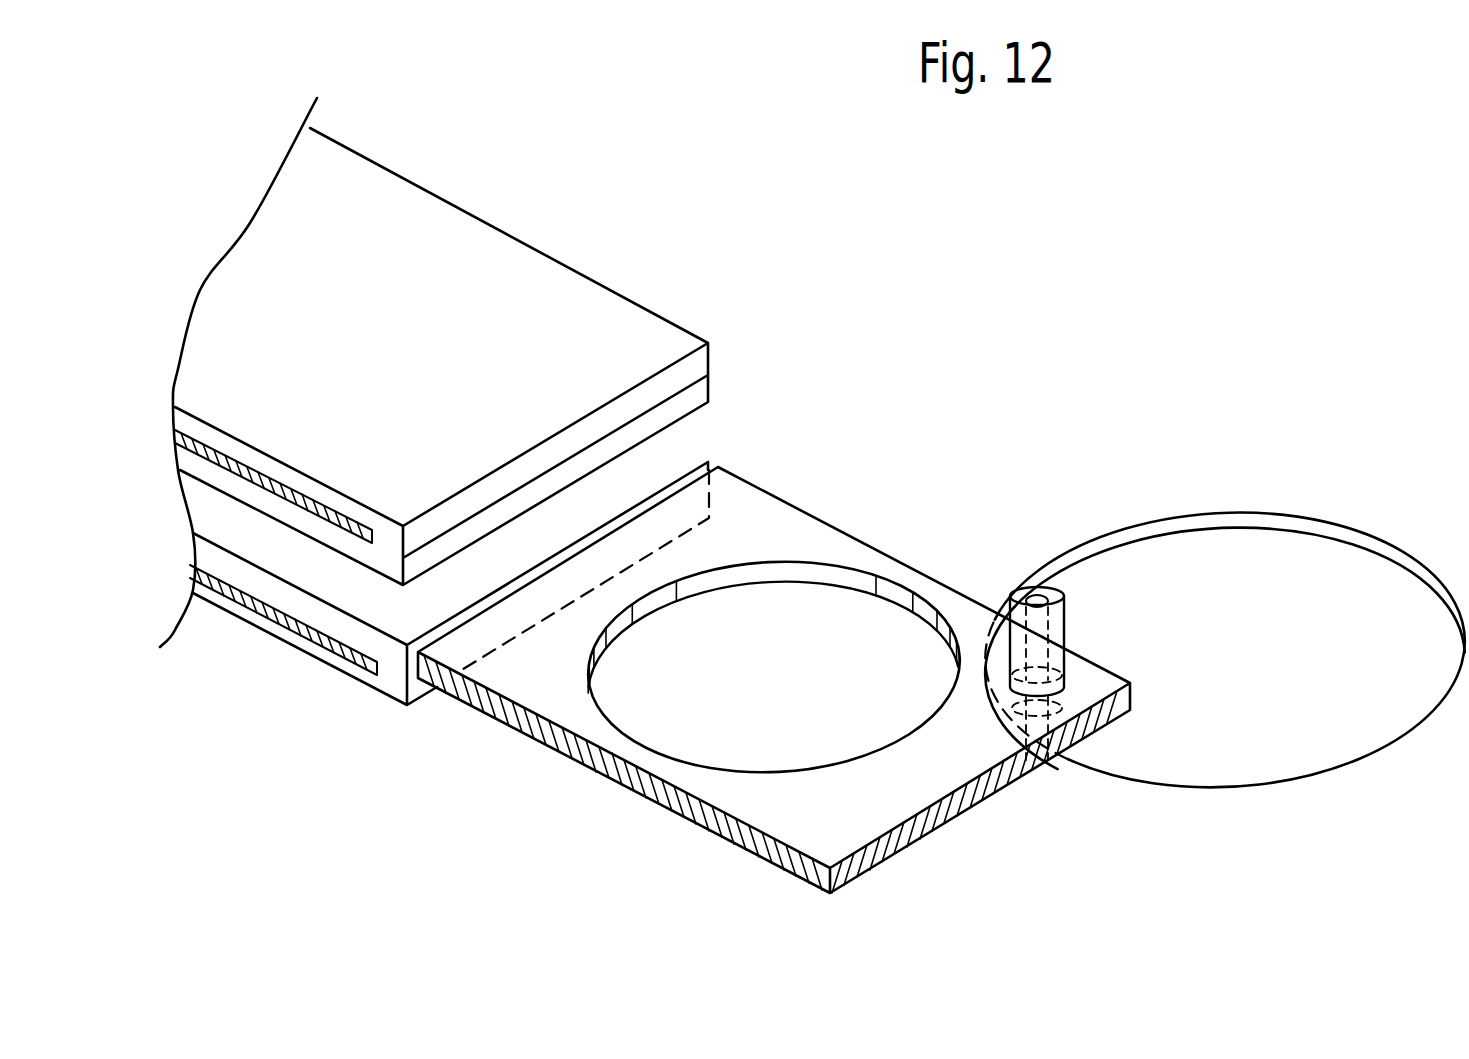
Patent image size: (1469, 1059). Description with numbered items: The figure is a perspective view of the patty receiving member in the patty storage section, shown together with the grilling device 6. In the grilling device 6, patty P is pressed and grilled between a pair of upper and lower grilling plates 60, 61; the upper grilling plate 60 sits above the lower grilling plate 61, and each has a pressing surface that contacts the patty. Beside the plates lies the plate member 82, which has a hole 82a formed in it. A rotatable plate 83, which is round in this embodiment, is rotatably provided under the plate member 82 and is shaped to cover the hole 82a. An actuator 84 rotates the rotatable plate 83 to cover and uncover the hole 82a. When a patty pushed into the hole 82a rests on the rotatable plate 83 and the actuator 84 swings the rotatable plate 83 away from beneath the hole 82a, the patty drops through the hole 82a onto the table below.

The grilling device 6 is at (433, 136).
The upper grilling plate 60 is at (458, 262).
The lower grilling plate 61 is at (583, 513).
The plate member 82 is at (763, 525).
The hole 82a is at (888, 602).
The rotatable plate 83 is at (1317, 558).
The actuator 84 is at (1048, 595).